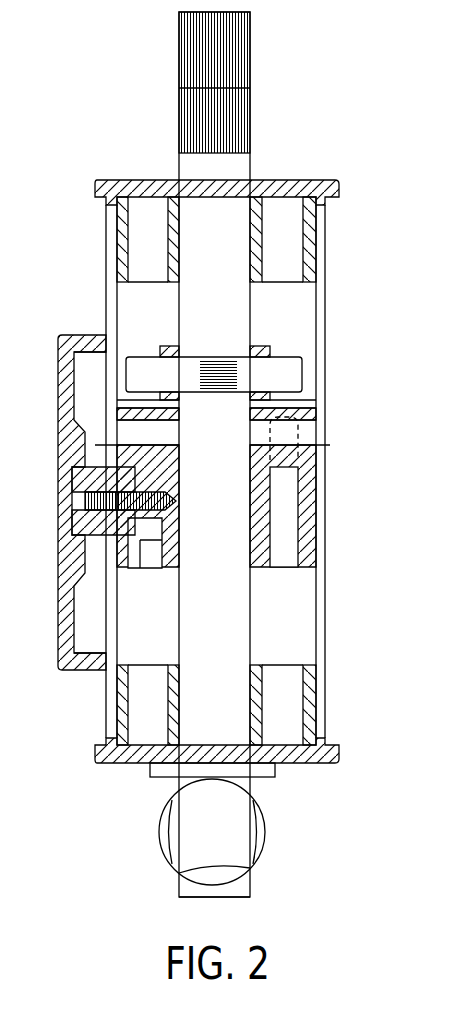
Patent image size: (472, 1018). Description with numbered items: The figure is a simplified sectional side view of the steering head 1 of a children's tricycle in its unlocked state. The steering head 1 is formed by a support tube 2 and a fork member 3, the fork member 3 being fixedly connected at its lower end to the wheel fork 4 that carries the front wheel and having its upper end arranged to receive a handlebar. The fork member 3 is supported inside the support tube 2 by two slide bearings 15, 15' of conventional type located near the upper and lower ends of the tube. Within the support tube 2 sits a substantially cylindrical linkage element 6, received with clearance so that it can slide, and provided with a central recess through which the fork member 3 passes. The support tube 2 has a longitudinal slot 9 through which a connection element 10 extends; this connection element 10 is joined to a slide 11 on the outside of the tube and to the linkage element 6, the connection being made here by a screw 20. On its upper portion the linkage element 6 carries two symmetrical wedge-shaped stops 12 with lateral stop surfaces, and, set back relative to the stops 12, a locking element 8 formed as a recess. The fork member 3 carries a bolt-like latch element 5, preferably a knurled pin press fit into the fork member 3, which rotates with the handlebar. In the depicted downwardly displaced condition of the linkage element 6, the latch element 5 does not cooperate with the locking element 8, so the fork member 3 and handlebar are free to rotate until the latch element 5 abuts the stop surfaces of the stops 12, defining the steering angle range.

The steering head 1 is at (337, 648).
The support tube 2 is at (325, 338).
The fork member 3 is at (237, 170).
The wheel fork 4 is at (267, 835).
The latch element 5 is at (150, 373).
The linkage element 6 is at (310, 452).
The locking element 8 is at (310, 408).
The longitudinal slot 9 is at (85, 462).
The connection element 10 is at (95, 538).
The slide 11 is at (80, 380).
The stops 12 is at (262, 348).
The slide bearing 15 is at (236, 239).
The slide bearing 15' is at (193, 705).
The screw 20 is at (72, 505).